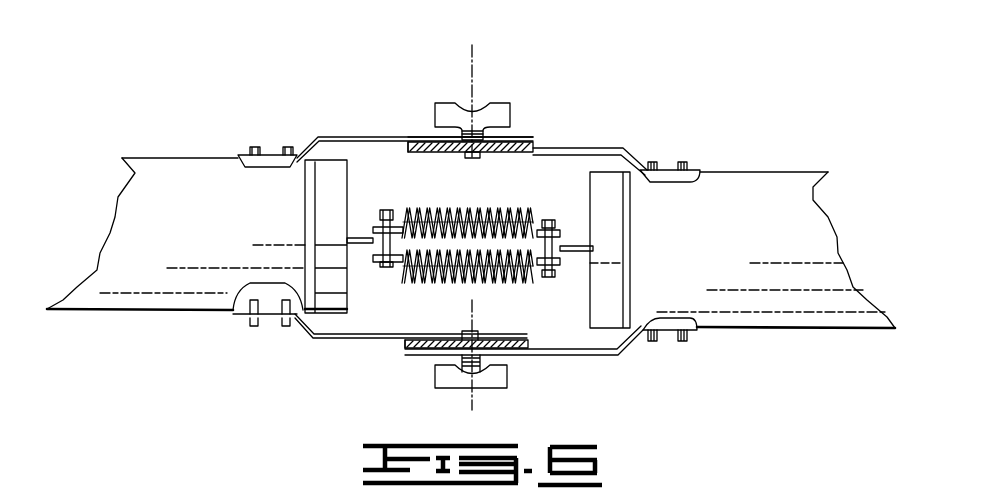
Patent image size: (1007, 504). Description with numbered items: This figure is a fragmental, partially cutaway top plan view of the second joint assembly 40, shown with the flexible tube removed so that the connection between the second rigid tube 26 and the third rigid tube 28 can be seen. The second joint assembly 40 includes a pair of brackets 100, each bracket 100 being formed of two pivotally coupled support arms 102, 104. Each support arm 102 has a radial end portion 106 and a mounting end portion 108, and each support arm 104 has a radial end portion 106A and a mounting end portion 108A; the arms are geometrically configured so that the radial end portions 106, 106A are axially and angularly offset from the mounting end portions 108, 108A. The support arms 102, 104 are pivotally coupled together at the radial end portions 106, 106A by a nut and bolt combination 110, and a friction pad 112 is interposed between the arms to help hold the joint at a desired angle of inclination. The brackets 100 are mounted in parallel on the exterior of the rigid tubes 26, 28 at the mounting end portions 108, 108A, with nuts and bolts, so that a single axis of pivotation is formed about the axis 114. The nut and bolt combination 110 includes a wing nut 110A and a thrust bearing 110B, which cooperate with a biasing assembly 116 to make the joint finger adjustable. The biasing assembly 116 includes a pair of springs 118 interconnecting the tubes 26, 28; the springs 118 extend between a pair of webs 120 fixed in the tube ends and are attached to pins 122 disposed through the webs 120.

The second rigid tube 26 is at (175, 158).
The third rigid tube 28 is at (752, 172).
The second joint assembly 40 is at (327, 68).
The bracket 100 is at (412, 139).
The support arm 102 is at (338, 137).
The support arm 104 is at (580, 148).
The radial end portion 106 is at (520, 140).
The radial end portion 106A is at (420, 350).
The mounting end portion 108 is at (272, 153).
The mounting end portion 108A is at (668, 170).
The nut and bolt combination 110 is at (510, 91).
The wing nut 110A is at (503, 103).
The thrust bearing 110B is at (483, 358).
The friction pad 112 is at (533, 143).
The axis 114 is at (465, 60).
The biasing assembly 116 is at (477, 210).
The spring 118 is at (413, 212).
The web 120 is at (353, 235).
The pin 122 is at (380, 250).